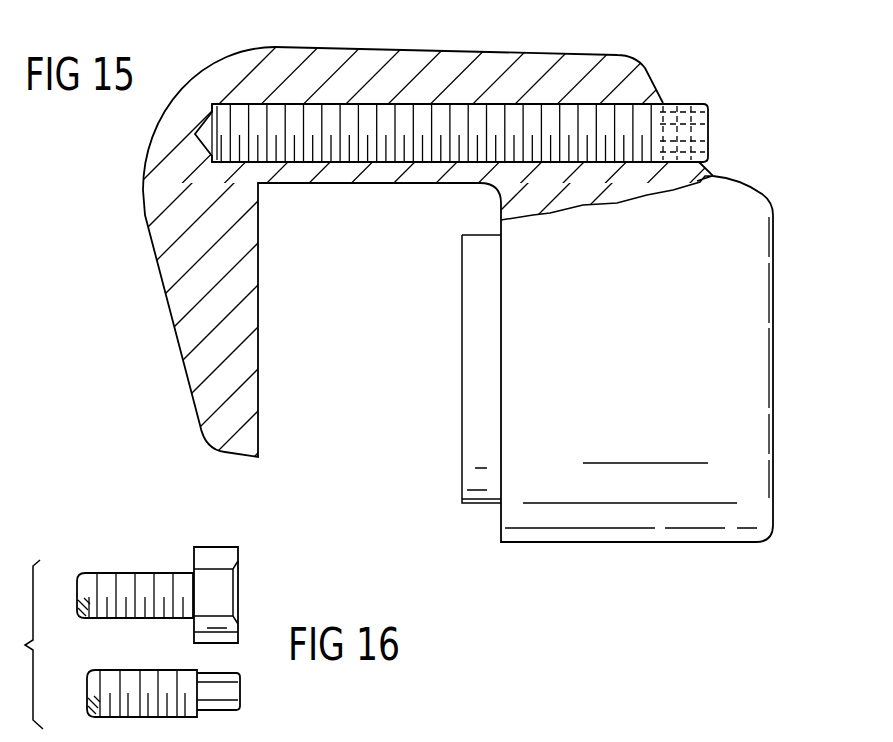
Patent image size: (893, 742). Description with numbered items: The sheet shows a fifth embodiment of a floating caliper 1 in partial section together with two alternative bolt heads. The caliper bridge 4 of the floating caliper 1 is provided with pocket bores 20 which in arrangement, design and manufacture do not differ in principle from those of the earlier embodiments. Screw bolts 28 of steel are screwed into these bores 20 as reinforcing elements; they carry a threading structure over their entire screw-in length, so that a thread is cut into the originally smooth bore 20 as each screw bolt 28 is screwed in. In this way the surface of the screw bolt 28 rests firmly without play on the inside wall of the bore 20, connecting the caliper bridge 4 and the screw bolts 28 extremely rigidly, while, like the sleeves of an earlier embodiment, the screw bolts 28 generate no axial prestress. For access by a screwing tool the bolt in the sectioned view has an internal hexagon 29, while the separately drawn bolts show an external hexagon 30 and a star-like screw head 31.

In FIG. 15, the floating caliper 1 is at (618, 51).
In FIG. 15, the caliper bridge 4 is at (367, 58).
In FIG. 15, the pocket bore 20 is at (495, 101).
In FIG. 15, the screw bolt 28 is at (632, 110).
In FIG. 16, the screw bolt 28 is at (148, 578).
In FIG. 15, the internal hexagon 29 is at (700, 128).
In FIG. 16, the external hexagon 30 is at (228, 553).
In FIG. 16, the star-like screw head 31 is at (233, 677).